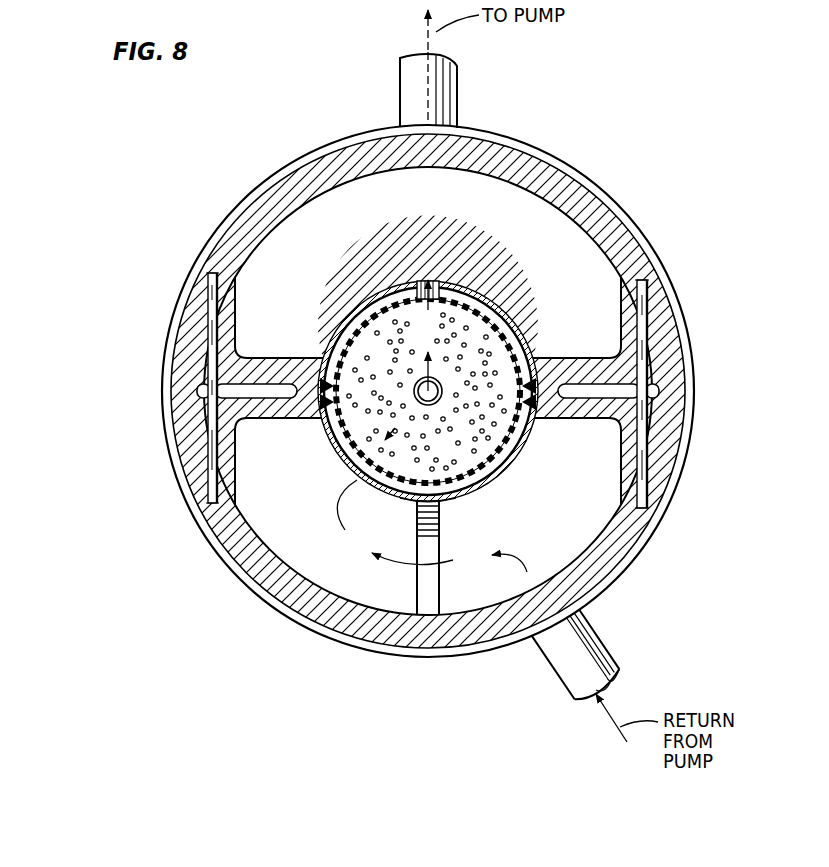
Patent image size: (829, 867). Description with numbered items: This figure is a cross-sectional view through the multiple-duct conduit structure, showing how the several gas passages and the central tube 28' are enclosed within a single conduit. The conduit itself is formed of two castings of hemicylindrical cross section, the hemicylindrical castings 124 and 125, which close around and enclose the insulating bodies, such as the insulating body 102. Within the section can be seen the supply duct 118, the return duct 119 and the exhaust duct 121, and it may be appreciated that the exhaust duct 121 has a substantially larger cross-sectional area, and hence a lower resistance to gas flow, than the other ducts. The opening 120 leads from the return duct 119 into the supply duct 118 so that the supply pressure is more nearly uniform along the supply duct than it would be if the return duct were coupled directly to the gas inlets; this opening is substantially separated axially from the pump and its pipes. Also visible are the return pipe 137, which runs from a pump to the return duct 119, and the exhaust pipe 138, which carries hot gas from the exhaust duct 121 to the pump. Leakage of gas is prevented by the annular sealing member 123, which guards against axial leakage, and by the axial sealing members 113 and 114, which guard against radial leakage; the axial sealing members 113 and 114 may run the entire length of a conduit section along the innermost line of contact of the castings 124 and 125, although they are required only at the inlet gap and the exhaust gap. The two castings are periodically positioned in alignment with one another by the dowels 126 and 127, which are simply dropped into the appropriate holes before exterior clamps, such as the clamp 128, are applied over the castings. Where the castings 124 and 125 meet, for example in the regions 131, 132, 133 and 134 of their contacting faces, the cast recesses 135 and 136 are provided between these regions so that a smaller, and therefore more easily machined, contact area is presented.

The exhaust pipe 138 is at (404, 80).
The exhaust duct 121 is at (512, 200).
The clamp 128 is at (625, 226).
The hemicylindrical casting 124 is at (316, 165).
The dowel 127 is at (641, 304).
The dowel 126 is at (207, 323).
The region 131 is at (200, 394).
The region 134 is at (660, 388).
The cast recess 135 is at (263, 392).
The cast recess 136 is at (593, 388).
The region 132 is at (312, 378).
The region 133 is at (550, 356).
The central tube 28' is at (397, 326).
The insulating body 102 is at (460, 325).
The axial sealing member 113 is at (312, 420).
The axial sealing member 114 is at (543, 423).
The annular sealing member 123 is at (490, 485).
The return duct 119 is at (598, 512).
The supply duct 118 is at (298, 553).
The hemicylindrical casting 125 is at (232, 540).
The opening 120 is at (422, 588).
The return pipe 137 is at (610, 658).